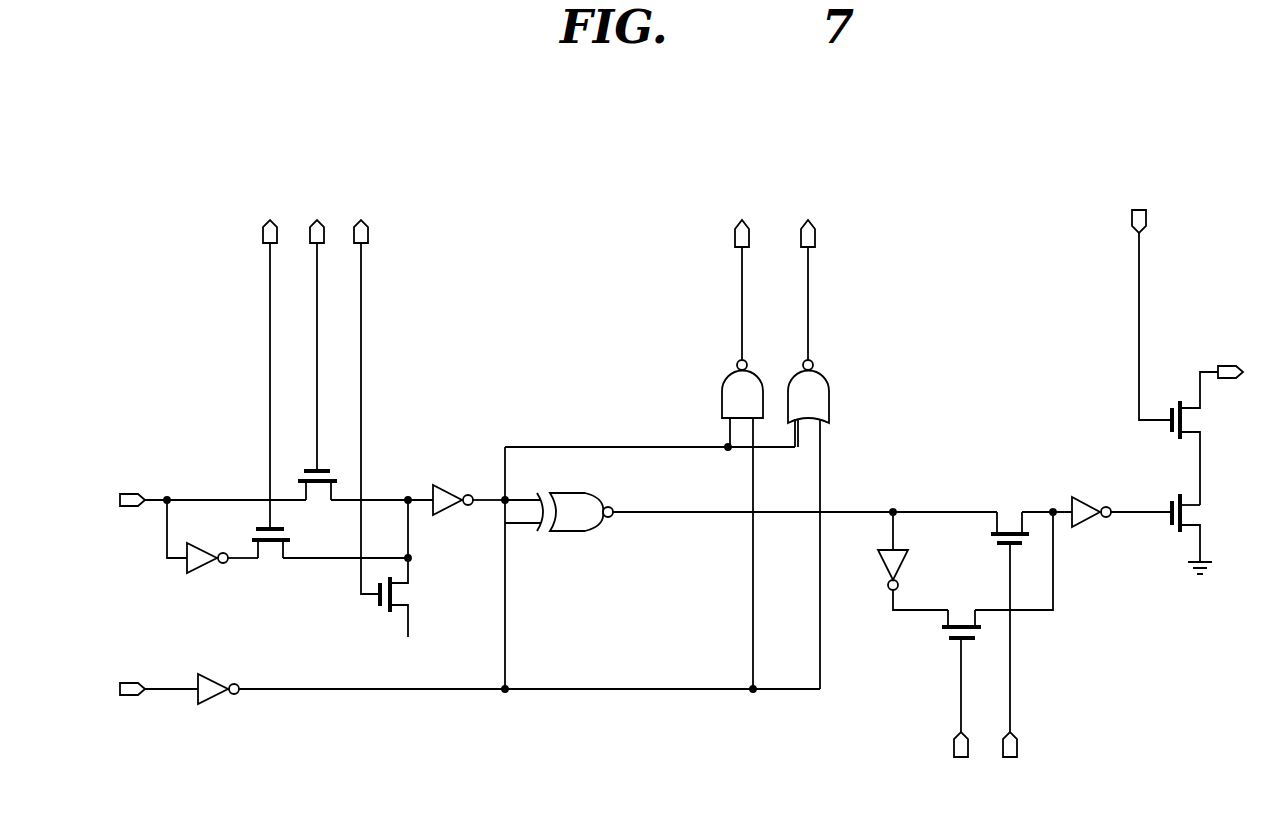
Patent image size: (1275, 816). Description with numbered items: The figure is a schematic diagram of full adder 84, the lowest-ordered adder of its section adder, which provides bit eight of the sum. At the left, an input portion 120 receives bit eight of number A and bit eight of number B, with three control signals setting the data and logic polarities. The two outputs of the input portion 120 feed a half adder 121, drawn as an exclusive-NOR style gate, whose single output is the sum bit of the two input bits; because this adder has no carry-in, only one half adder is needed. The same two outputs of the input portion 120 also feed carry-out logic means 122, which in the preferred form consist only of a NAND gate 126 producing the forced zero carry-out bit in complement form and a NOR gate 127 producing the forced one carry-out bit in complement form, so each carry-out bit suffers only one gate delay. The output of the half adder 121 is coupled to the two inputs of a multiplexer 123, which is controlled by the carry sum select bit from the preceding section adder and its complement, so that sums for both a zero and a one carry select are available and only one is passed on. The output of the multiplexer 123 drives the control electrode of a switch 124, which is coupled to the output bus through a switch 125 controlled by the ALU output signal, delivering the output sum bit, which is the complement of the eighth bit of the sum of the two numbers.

The full adder 84 is at (147, 61).
The input portion 120 is at (203, 405).
The half adder 121 is at (560, 435).
The carry-out logic means 122 is at (705, 335).
The multiplexer 123 is at (985, 472).
The switch 124 is at (1175, 540).
The switch 125 is at (1170, 440).
The NAND gate 126 is at (722, 405).
The NOR gate 127 is at (830, 405).